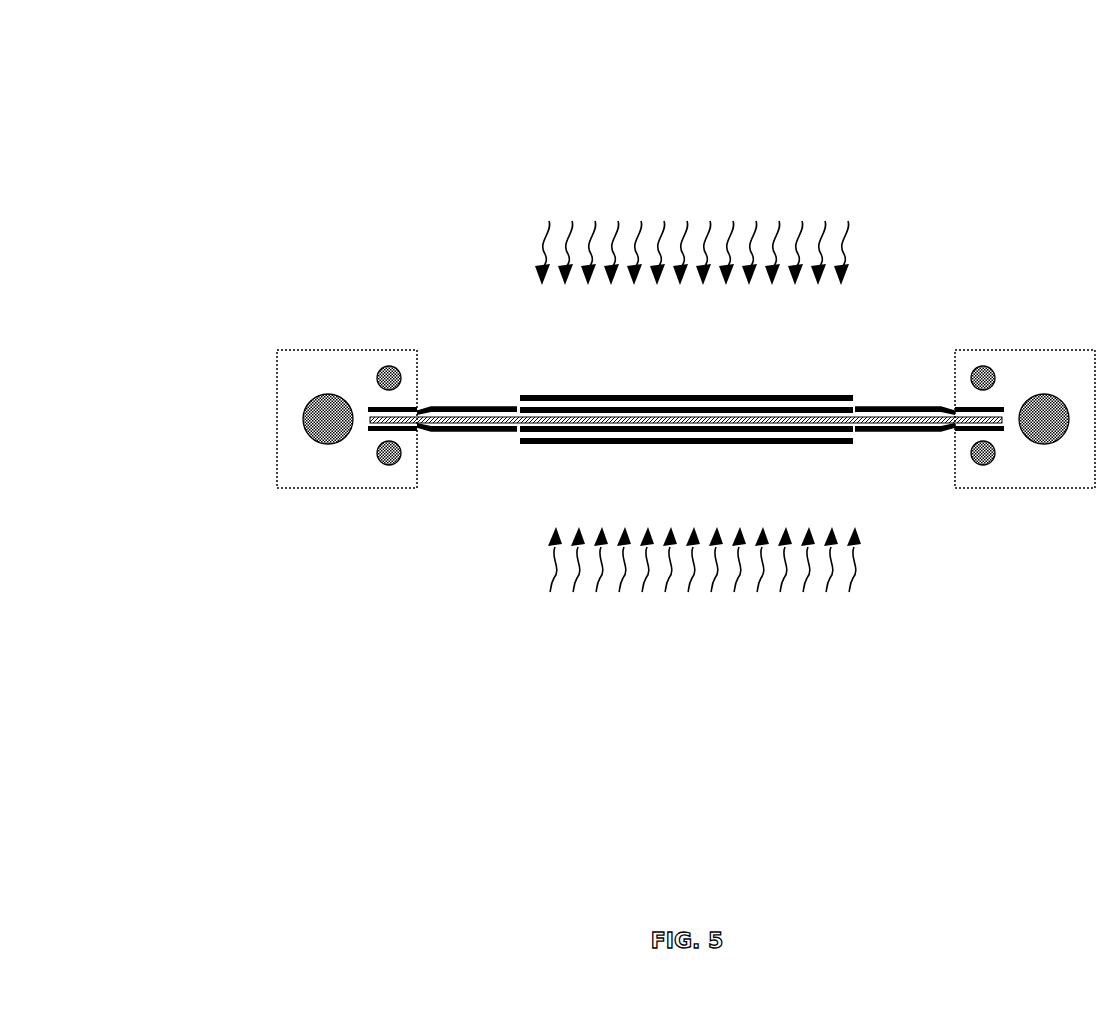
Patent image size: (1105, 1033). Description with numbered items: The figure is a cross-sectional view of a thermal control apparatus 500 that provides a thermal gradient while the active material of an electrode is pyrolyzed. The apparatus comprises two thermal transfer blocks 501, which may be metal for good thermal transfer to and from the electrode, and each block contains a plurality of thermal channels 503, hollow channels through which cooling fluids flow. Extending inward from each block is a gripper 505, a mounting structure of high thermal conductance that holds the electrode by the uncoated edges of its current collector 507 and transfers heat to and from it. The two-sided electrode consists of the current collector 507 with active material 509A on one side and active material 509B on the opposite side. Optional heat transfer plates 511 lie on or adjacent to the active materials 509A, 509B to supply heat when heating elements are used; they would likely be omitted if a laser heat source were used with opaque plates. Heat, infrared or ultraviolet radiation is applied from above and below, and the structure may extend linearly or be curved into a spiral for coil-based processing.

The thermal control apparatus 500 is at (170, 112).
The thermal transfer block 501 is at (1030, 308).
The thermal channels 503 is at (382, 388).
The gripper 505 is at (910, 407).
The current collector 507 is at (573, 417).
The active material 509A is at (735, 410).
The active material 509B is at (760, 431).
The heat transfer plates 511 is at (519, 397).